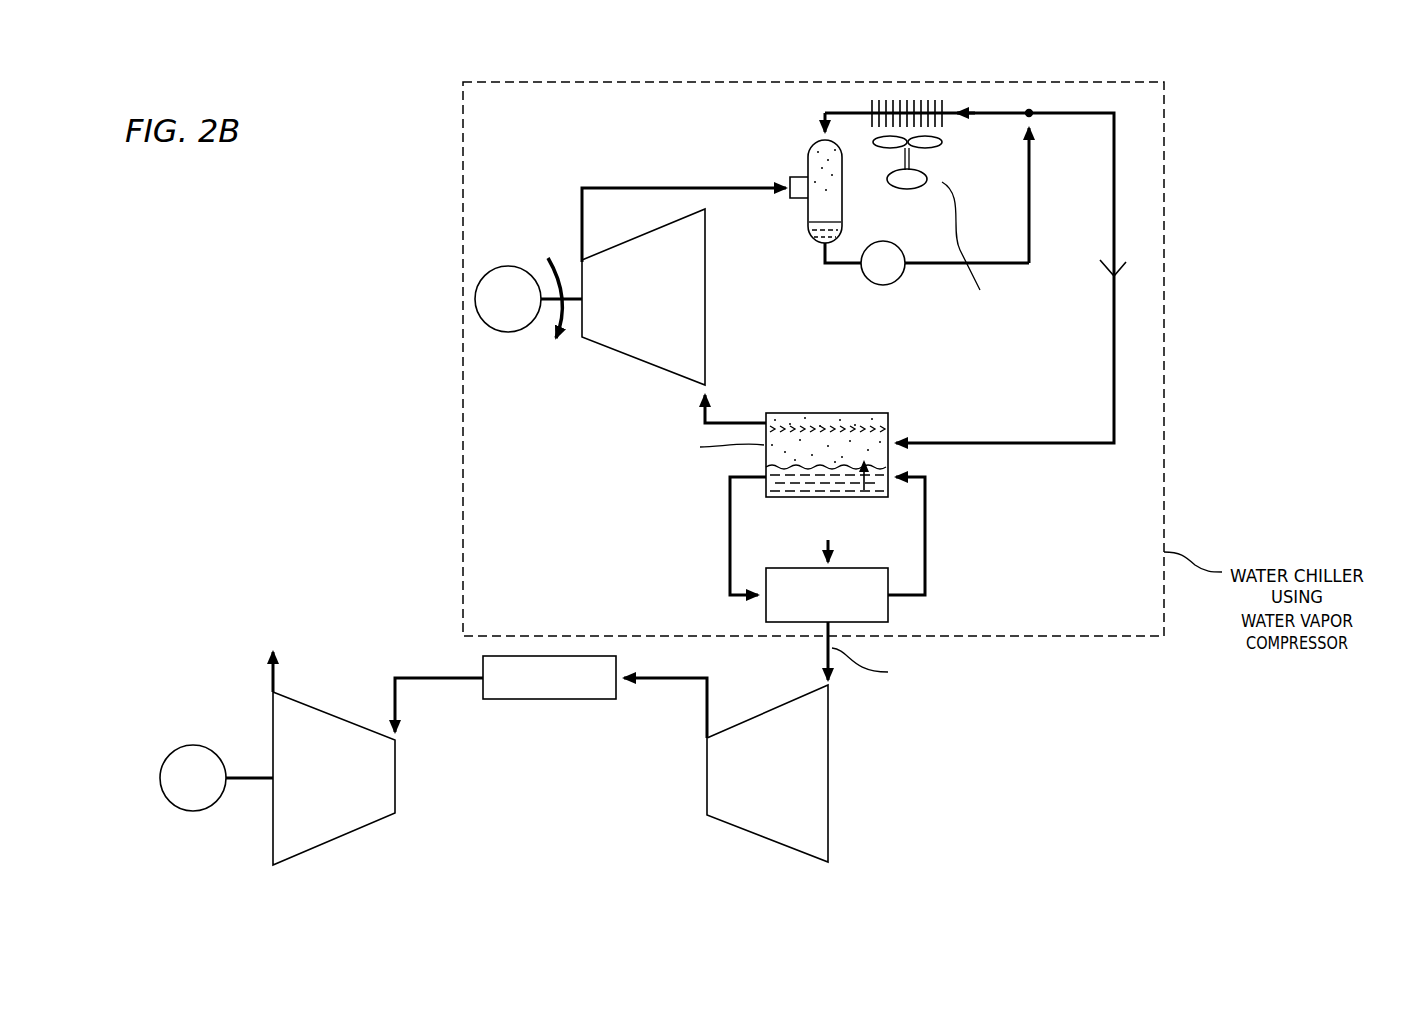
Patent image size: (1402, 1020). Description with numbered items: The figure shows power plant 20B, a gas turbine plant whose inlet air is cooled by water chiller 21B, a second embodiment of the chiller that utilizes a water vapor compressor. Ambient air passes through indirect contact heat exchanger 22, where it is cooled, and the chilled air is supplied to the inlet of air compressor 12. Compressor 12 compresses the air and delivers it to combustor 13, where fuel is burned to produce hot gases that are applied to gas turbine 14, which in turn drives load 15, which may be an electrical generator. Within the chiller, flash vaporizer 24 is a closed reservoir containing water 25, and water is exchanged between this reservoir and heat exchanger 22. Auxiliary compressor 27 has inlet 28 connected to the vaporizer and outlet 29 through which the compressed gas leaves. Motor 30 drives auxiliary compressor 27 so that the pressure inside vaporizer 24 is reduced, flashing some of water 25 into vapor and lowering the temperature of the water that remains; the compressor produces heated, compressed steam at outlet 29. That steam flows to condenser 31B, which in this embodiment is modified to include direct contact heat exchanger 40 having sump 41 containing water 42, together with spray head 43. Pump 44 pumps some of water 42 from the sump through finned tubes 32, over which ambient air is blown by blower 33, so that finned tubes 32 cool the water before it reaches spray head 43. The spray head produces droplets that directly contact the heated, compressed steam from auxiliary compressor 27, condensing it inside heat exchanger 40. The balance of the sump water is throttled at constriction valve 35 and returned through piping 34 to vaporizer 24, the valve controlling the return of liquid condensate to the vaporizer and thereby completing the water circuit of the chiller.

The air compressor 12 is at (828, 822).
The combustor 13 is at (540, 699).
The gas turbine 14 is at (395, 800).
The load 15 is at (165, 762).
The power plant 20B is at (452, 462).
The water chiller 21B is at (1164, 353).
The indirect contact heat exchanger 22 is at (888, 612).
The flash vaporizer 24 is at (888, 428).
The water 25 is at (778, 500).
The auxiliary compressor 27 is at (705, 343).
The inlet 28 is at (703, 410).
The outlet 29 is at (580, 198).
The motor 30 is at (505, 332).
The condenser 31B is at (962, 98).
The finned tubes 32 is at (900, 100).
The blower 33 is at (913, 158).
The piping 34 is at (1114, 165).
The constriction valve 35 is at (1126, 262).
The direct contact heat exchanger 40 is at (802, 177).
The sump 41 is at (843, 230).
The water 42 is at (808, 224).
The spray head 43 is at (820, 137).
The pump 44 is at (868, 284).